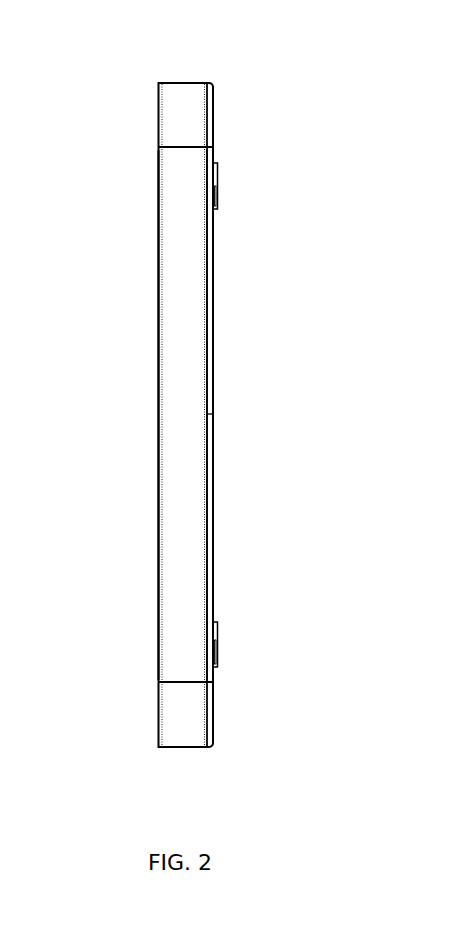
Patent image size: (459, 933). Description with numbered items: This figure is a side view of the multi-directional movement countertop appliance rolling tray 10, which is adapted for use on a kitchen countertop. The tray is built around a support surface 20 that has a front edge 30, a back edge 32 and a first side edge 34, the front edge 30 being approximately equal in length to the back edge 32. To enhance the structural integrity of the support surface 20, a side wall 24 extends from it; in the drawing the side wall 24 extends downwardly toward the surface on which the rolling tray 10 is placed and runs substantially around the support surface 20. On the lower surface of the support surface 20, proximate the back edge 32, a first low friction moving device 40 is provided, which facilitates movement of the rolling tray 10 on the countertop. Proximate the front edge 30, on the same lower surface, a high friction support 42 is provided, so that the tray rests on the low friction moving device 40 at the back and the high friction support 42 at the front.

The multi-directional movement countertop appliance rolling tray 10 is at (100, 686).
The support surface 20 is at (158, 518).
The side wall 24 is at (192, 462).
The front edge 30 is at (188, 746).
The back edge 32 is at (178, 82).
The first side edge 34 is at (173, 280).
The first low friction moving device 40 is at (215, 188).
The high friction support 42 is at (217, 638).